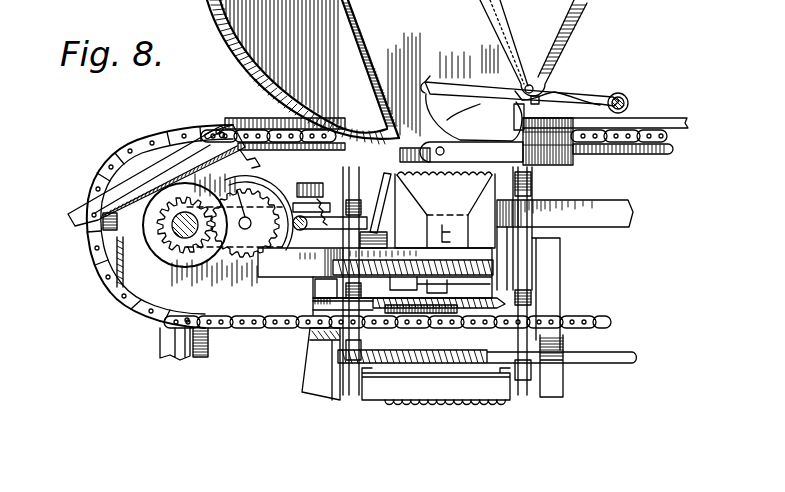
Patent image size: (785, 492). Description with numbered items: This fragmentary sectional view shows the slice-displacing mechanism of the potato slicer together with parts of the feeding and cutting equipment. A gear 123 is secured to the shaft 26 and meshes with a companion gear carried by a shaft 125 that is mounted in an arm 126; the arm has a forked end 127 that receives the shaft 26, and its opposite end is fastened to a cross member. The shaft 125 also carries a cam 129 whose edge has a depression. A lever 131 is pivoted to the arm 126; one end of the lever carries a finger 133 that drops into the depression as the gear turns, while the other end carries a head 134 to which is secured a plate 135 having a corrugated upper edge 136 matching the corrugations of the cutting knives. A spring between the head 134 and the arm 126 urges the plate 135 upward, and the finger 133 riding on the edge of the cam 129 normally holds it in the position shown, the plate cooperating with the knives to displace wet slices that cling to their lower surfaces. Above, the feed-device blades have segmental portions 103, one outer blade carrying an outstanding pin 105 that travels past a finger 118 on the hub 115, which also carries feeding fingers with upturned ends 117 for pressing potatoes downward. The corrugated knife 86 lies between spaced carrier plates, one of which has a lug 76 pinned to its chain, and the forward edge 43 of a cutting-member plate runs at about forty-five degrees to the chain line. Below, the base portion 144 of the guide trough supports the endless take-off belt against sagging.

The shaft 26 is at (163, 260).
The forward edge of plate 43 is at (344, 275).
The lug 76 is at (364, 394).
The corrugated knife 86 is at (405, 407).
The segmental portions 103 is at (573, 53).
The outstanding pin 105 is at (556, 80).
The hub 115 is at (645, 101).
The upturned ends 117 is at (424, 80).
The finger 118 is at (433, 70).
The gear 123 is at (383, 309).
The shaft 125 is at (244, 158).
The arm 126 is at (160, 226).
The forked end 127 is at (153, 223).
The cam 129 is at (234, 246).
The lever 131 is at (270, 181).
The finger 133 is at (252, 153).
The head 134 is at (339, 198).
The plate 135 is at (445, 210).
The corrugated upper edge 136 is at (390, 187).
The base portion 144 is at (493, 286).